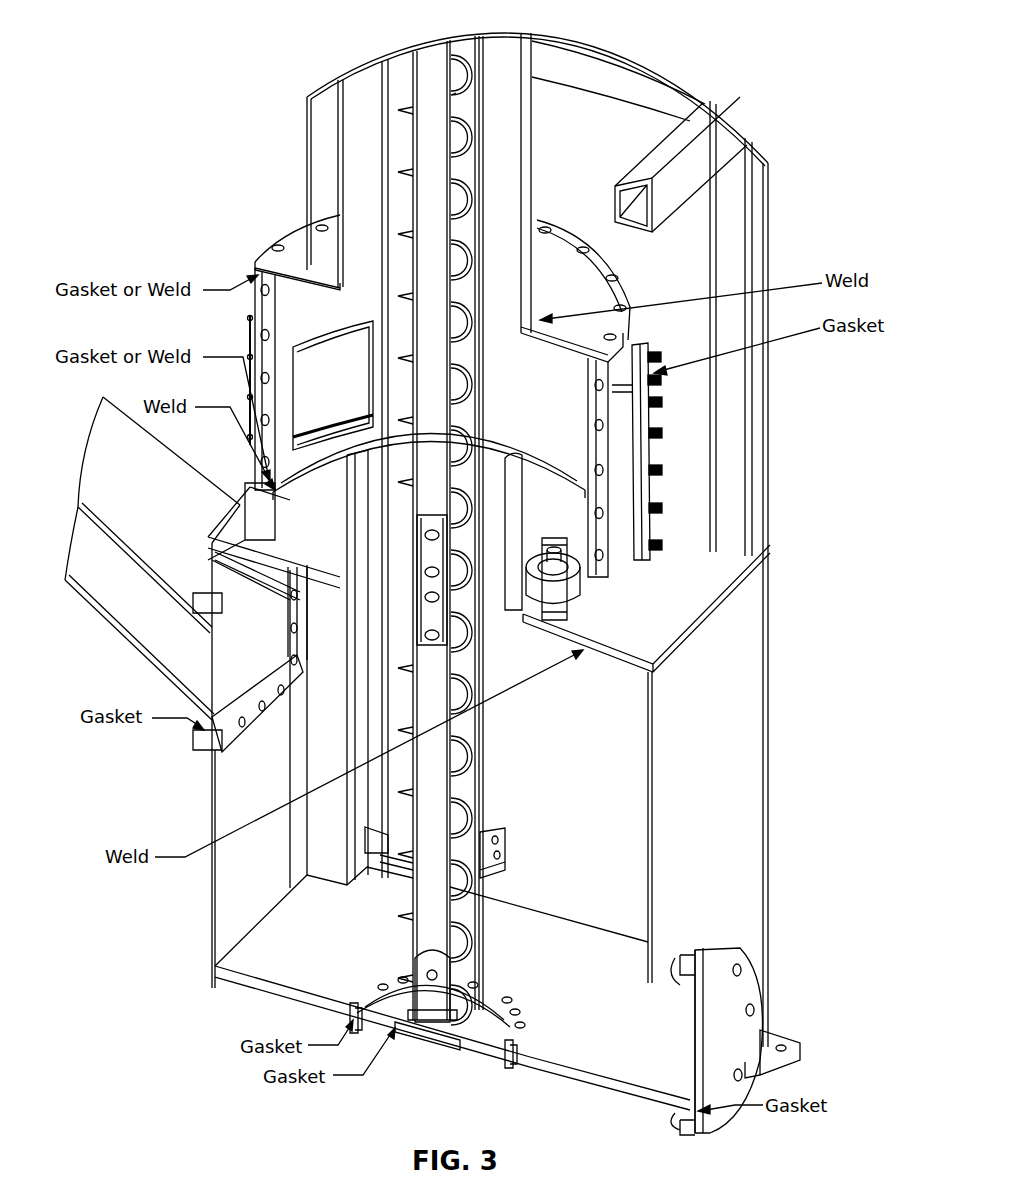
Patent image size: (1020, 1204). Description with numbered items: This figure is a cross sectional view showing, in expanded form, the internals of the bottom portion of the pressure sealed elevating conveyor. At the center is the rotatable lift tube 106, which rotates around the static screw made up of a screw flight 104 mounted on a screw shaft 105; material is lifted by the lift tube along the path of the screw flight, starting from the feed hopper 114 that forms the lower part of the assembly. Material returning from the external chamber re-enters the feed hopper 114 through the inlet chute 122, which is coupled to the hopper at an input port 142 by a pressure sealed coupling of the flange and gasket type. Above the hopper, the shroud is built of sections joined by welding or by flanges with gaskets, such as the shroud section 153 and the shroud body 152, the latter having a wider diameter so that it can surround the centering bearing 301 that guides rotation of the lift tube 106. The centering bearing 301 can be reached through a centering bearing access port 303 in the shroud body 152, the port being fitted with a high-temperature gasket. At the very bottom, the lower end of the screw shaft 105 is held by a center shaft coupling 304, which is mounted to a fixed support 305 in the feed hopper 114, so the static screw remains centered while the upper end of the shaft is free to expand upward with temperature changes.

The screw flight 104 is at (470, 778).
The screw shaft 105 is at (428, 824).
The rotatable lift tube 106 is at (488, 751).
The feed hopper 114 is at (710, 853).
The inlet chute 122 is at (162, 635).
The input port 142 is at (212, 720).
The shroud body 152 is at (552, 435).
The shroud section 153 is at (545, 296).
The centering bearing 301 is at (533, 588).
The centering bearing access port 303 is at (662, 413).
The center shaft coupling 304 is at (486, 1022).
The fixed support 305 is at (487, 1042).